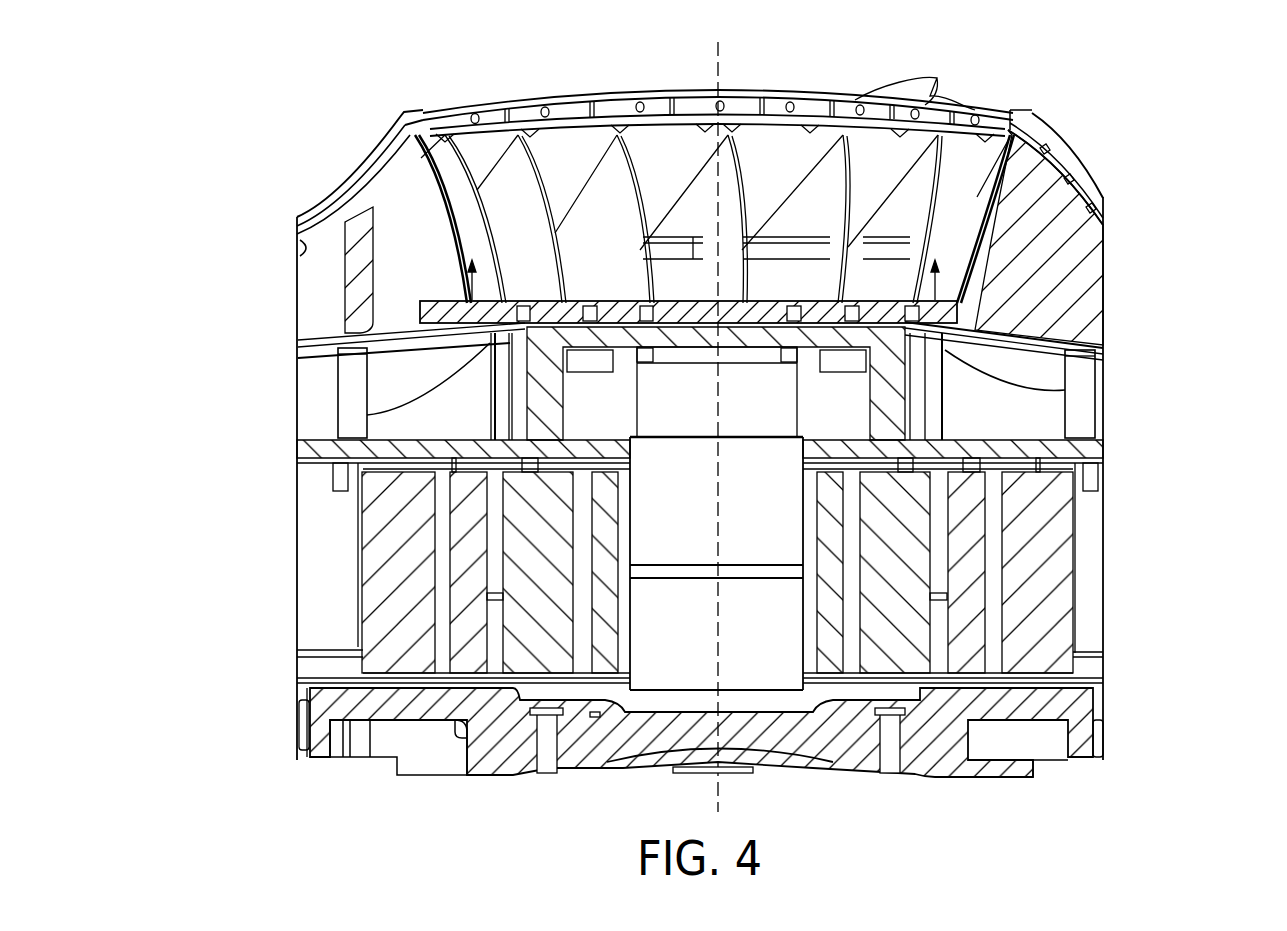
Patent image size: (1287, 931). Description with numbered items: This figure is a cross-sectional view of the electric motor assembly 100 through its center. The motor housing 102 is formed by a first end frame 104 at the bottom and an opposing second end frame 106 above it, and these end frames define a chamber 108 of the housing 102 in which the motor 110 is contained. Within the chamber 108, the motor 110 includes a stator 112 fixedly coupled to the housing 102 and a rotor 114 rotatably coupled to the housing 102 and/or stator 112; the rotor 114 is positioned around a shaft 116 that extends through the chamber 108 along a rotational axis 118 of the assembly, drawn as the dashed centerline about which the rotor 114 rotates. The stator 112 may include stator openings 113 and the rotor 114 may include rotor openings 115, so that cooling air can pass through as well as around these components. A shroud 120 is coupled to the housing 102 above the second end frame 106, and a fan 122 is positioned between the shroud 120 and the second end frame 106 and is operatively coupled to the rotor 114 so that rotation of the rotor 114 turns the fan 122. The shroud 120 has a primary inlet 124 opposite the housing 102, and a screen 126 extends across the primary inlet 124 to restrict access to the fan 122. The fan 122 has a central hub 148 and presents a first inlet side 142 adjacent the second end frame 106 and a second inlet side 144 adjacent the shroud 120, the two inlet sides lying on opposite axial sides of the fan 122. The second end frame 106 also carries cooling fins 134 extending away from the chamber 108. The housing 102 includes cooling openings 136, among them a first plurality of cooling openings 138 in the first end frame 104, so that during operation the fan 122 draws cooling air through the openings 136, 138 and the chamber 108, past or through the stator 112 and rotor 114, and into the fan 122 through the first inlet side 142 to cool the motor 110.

The electric motor assembly 100 is at (252, 132).
The motor housing 102 is at (468, 794).
The first end frame 104 is at (942, 765).
The second end frame 106 is at (1058, 452).
The chamber 108 is at (1099, 544).
The motor 110 is at (280, 535).
The stator 112 is at (1060, 650).
The stator openings 113 is at (995, 585).
The rotor 114 is at (920, 665).
The rotor openings 115 is at (845, 625).
The shaft 116 is at (660, 620).
The rotational axis 118 is at (726, 48).
The shroud 120 is at (1070, 187).
The fan 122 is at (1083, 268).
The primary inlet 124 is at (796, 141).
The screen 126 is at (937, 78).
The cooling fins 134 is at (378, 378).
The cooling openings 136 is at (873, 761).
The first plurality of cooling openings 138 is at (544, 792).
The first inlet side 142 is at (338, 413).
The second inlet side 144 is at (690, 125).
The central hub 148 is at (810, 299).